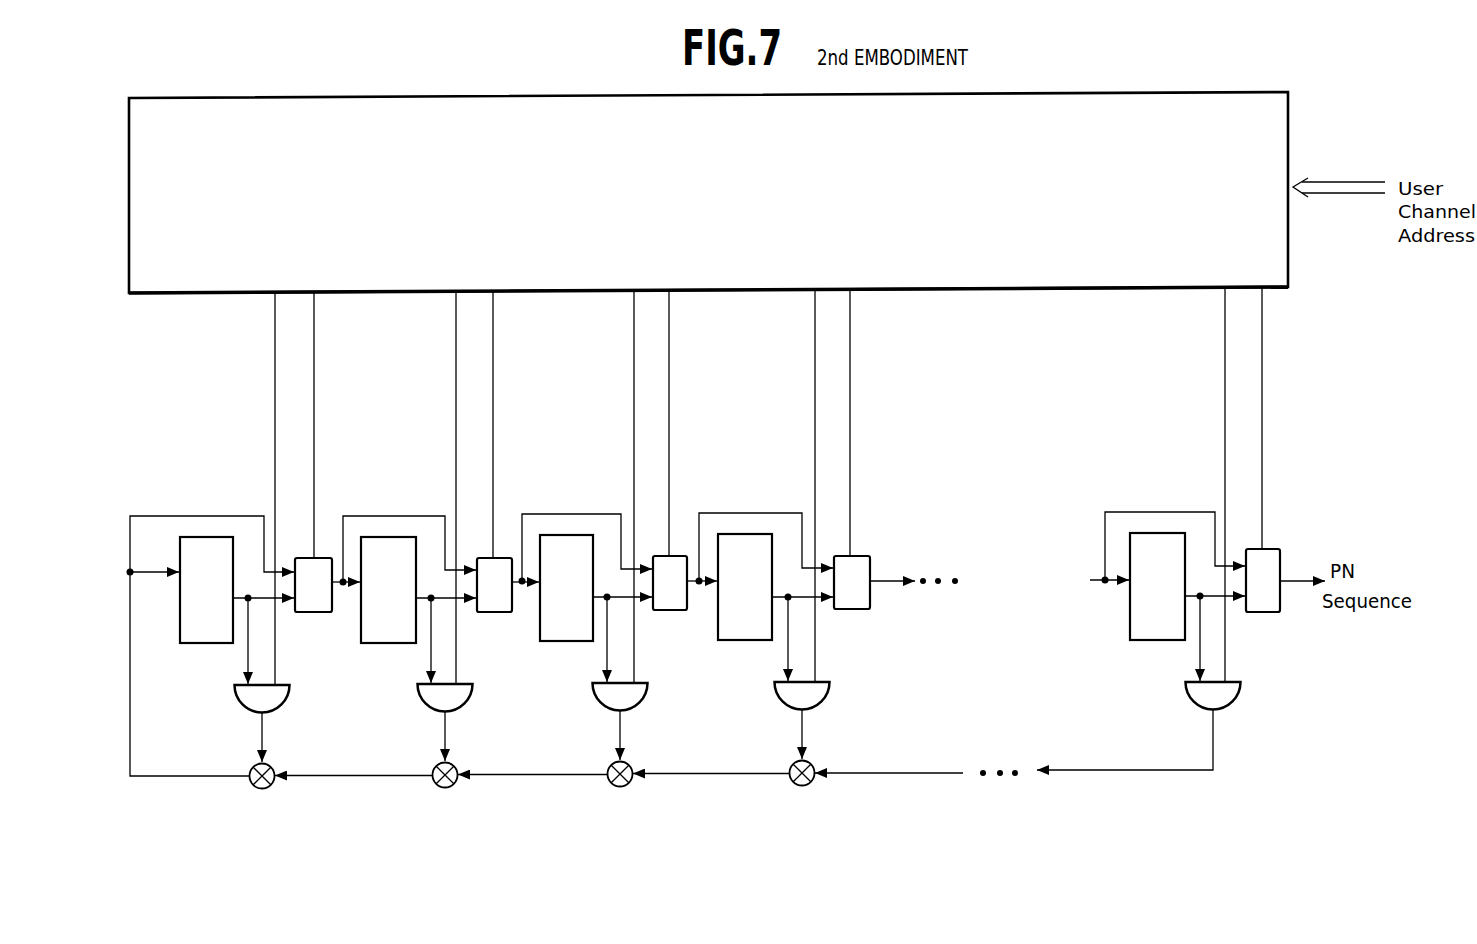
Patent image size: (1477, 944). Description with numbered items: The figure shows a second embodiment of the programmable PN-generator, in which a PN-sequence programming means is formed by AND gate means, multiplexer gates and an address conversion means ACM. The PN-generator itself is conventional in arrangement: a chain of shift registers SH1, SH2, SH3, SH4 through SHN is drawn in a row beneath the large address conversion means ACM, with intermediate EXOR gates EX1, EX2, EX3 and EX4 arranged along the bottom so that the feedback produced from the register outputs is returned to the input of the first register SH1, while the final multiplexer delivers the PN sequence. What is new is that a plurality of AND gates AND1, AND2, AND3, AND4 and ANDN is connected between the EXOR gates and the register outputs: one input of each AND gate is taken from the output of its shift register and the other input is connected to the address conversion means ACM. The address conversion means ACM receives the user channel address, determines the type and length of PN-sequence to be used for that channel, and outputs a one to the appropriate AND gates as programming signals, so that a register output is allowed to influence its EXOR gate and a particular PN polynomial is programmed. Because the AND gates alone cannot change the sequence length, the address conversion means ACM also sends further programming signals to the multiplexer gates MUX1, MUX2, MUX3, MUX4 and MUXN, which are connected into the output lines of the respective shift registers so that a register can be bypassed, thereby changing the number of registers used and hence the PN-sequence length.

The address conversion means ACM is at (708, 192).
The first shift register SH1 is at (206, 590).
The second shift register SH2 is at (388, 590).
The third shift register SH3 is at (566, 588).
The fourth shift register SH4 is at (745, 587).
The Nth shift register SHN is at (1157, 586).
The first multiplexer gate MUX1 is at (313, 585).
The second multiplexer gate MUX2 is at (494, 585).
The third multiplexer gate MUX3 is at (670, 583).
The fourth multiplexer gate MUX4 is at (852, 582).
The Nth multiplexer gate MUXN is at (1263, 580).
The first AND gate AND1 is at (233, 699).
The second AND gate AND2 is at (416, 698).
The third AND gate AND3 is at (593, 697).
The fourth AND gate AND4 is at (771, 696).
The Nth AND gate ANDN is at (1182, 696).
The first EXOR gate EX1 is at (265, 792).
The second EXOR gate EX2 is at (447, 791).
The third EXOR gate EX3 is at (619, 790).
The fourth EXOR gate EX4 is at (800, 789).